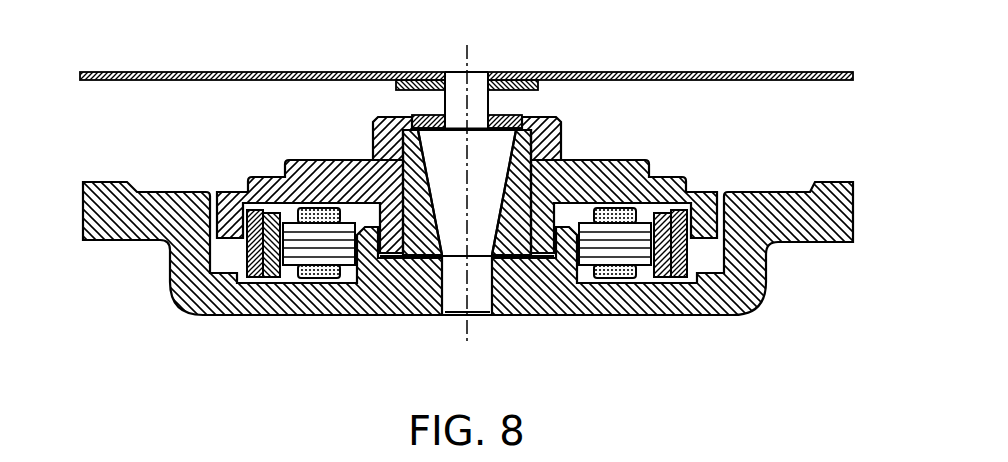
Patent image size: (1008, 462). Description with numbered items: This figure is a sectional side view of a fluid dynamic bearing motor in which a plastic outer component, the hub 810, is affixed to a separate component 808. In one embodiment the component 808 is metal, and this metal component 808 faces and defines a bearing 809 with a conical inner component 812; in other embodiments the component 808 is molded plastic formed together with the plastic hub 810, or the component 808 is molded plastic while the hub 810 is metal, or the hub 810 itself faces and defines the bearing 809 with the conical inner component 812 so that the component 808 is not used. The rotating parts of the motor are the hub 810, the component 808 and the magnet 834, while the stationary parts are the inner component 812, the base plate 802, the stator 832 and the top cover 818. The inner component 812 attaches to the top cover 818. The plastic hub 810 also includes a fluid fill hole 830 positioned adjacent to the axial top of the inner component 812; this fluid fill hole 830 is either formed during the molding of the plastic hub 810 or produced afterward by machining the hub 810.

The base plate 802 is at (548, 315).
The component 808 is at (560, 126).
The bearing 809 is at (405, 153).
The hub 810 is at (590, 163).
The conical inner component 812 is at (514, 160).
The top cover 818 is at (743, 72).
The fluid fill hole 830 is at (423, 118).
The stator 832 is at (620, 278).
The magnet 834 is at (677, 270).